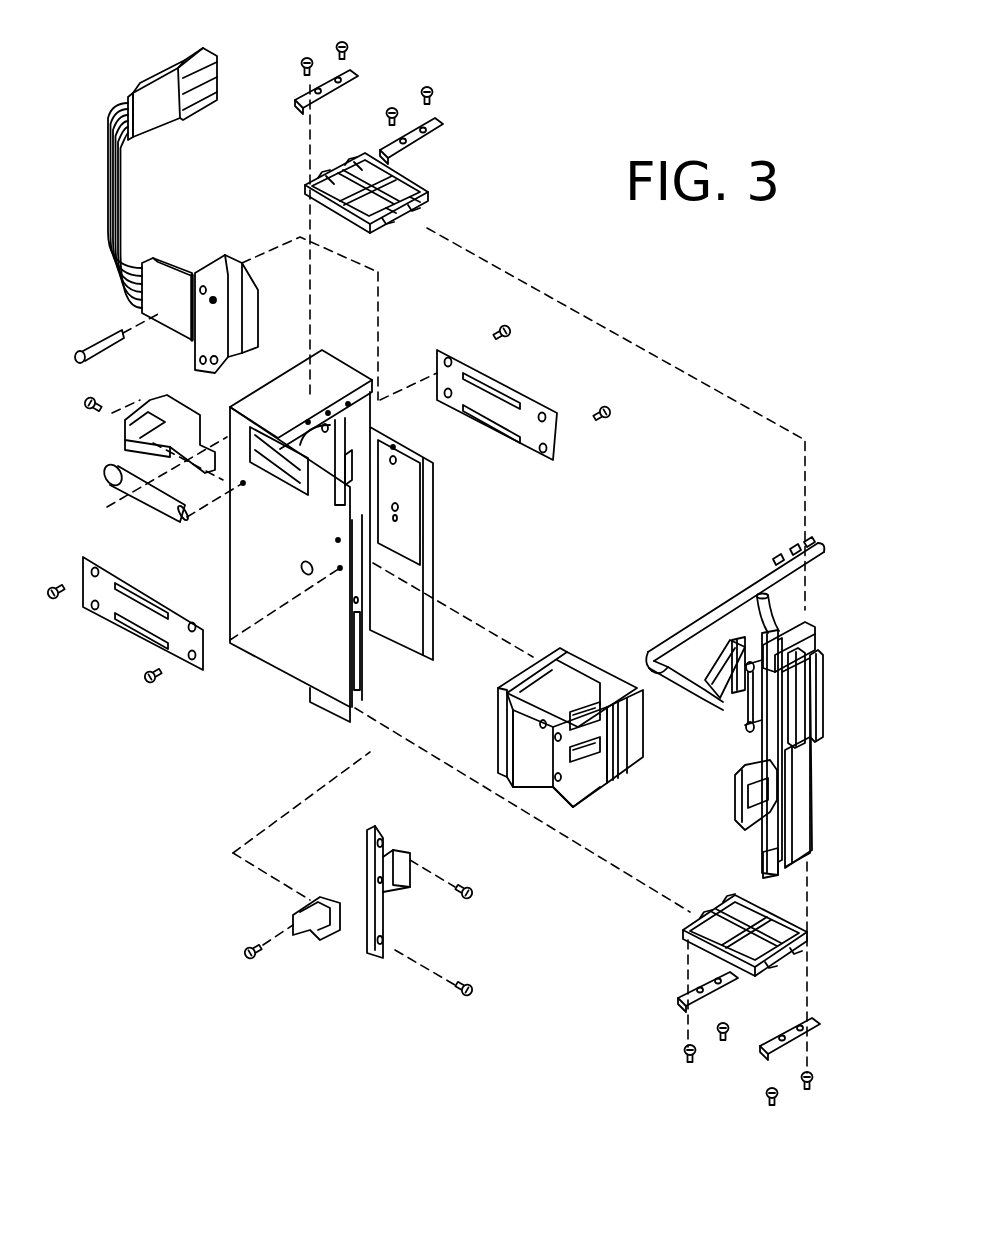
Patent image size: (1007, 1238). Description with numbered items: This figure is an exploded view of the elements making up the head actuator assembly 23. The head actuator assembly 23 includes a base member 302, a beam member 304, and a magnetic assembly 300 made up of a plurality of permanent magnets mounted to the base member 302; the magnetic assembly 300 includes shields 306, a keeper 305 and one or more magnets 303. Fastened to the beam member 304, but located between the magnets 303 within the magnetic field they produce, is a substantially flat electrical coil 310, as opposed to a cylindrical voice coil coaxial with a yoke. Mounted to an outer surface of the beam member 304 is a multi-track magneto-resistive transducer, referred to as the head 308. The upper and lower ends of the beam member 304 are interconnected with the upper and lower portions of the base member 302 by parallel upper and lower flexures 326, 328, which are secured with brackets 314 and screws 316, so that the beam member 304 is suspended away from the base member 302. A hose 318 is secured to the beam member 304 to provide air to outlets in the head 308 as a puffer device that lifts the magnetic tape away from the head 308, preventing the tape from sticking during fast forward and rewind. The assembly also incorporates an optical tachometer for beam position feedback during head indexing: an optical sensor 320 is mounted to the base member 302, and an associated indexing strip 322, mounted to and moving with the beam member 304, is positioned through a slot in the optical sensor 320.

The head actuator assembly 23 is at (539, 77).
The magnetic assembly 300 is at (635, 648).
The base member 302 is at (437, 507).
The magnets 303 is at (597, 680).
The beam member 304 is at (823, 733).
The keeper 305 is at (533, 773).
The shields 306 is at (643, 757).
The multi-track magneto-resistive transducer 308 is at (823, 697).
The electrical coil 310 is at (738, 787).
The brackets 314 is at (296, 105).
The screws 316 is at (334, 43).
The hose 318 is at (772, 612).
The optical sensor 320 is at (220, 268).
The indexing strip 322 is at (720, 680).
The upper flexure 326 is at (441, 171).
The lower flexure 328 is at (668, 940).